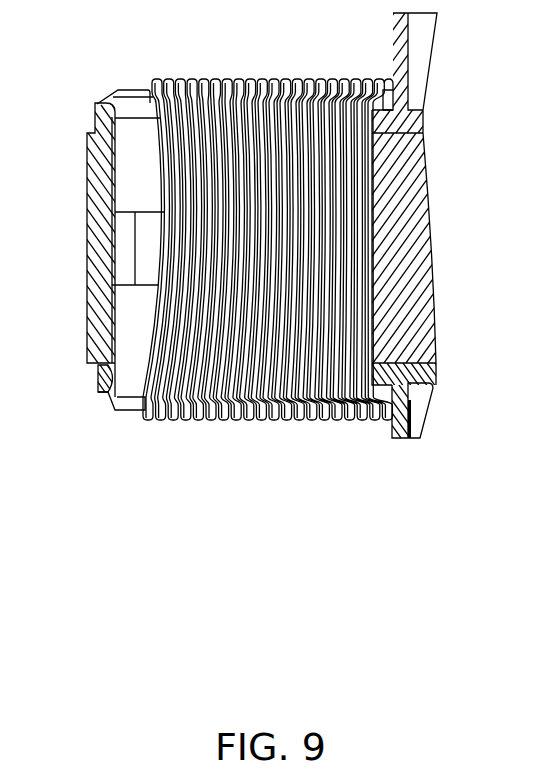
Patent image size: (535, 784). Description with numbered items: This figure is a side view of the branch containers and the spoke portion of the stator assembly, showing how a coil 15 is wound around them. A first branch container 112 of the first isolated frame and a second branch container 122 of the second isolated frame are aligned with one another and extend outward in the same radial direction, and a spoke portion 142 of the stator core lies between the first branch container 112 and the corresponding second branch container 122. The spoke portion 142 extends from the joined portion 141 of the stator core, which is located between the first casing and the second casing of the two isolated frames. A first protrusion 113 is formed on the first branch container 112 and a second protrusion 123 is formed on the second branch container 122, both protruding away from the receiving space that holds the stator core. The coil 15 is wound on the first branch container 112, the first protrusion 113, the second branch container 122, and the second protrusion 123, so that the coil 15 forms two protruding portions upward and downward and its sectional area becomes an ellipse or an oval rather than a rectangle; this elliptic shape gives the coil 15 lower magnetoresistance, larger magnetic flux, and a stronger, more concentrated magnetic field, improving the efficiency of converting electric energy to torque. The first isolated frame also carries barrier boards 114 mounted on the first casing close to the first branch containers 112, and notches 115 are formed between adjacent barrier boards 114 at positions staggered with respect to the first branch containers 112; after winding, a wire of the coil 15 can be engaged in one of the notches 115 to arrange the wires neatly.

The coil 15 is at (254, 78).
The first branch container 112 is at (127, 373).
The first protrusion 113 is at (122, 412).
The barrier board 114 is at (403, 440).
The notch 115 is at (412, 412).
The second branch container 122 is at (131, 166).
The second protrusion 123 is at (131, 92).
The joined portion 141 is at (427, 233).
The spoke portion 142 is at (145, 262).